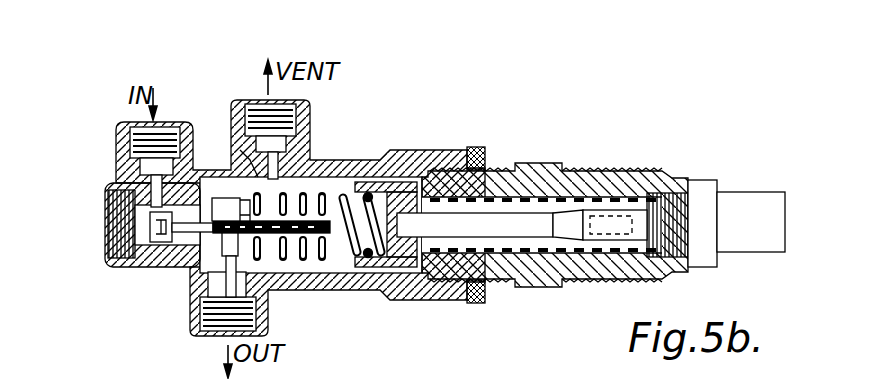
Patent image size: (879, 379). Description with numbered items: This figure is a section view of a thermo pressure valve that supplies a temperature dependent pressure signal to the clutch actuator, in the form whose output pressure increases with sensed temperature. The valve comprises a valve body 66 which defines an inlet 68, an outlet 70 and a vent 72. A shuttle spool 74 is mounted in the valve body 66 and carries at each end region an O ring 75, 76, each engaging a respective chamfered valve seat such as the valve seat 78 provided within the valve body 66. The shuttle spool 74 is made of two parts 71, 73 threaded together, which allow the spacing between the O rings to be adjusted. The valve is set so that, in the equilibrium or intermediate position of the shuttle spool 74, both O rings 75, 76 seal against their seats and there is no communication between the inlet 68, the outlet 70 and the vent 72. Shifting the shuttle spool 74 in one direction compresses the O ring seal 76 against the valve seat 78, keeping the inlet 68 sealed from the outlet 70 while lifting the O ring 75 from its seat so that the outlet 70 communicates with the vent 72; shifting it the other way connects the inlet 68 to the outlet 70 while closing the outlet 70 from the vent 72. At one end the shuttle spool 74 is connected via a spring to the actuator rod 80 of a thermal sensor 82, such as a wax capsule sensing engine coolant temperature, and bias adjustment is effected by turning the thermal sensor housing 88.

The valve body 66 is at (340, 152).
The inlet 68 is at (166, 125).
The outlet 70 is at (216, 328).
The shuttle spool part 71 is at (140, 262).
The vent 72 is at (263, 103).
The shuttle spool part 73 is at (303, 292).
The shuttle spool 74 is at (213, 258).
The O ring 75 is at (168, 248).
The O ring seal 76 is at (158, 204).
The chamfered valve seat 78 is at (266, 178).
The actuator rod 80 is at (521, 227).
The thermal sensor 82 is at (753, 235).
The thermal sensor housing 88 is at (576, 178).